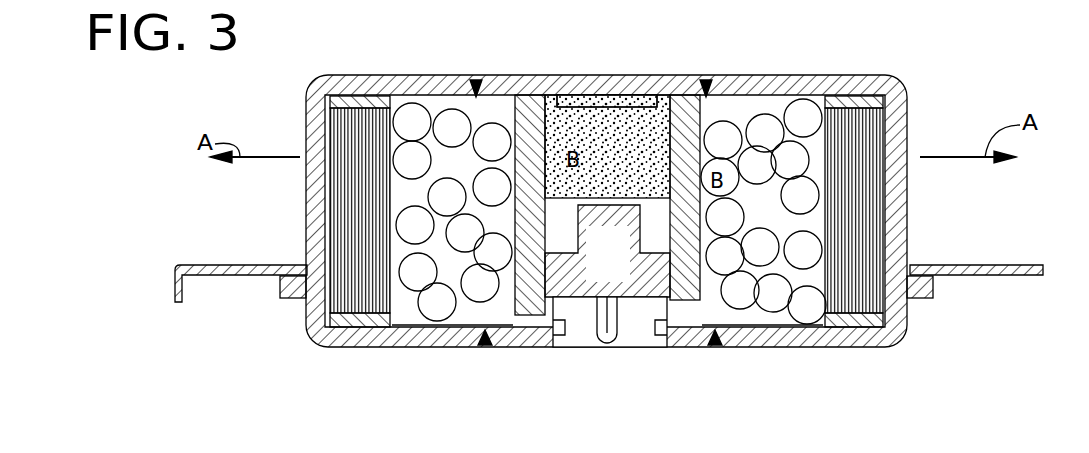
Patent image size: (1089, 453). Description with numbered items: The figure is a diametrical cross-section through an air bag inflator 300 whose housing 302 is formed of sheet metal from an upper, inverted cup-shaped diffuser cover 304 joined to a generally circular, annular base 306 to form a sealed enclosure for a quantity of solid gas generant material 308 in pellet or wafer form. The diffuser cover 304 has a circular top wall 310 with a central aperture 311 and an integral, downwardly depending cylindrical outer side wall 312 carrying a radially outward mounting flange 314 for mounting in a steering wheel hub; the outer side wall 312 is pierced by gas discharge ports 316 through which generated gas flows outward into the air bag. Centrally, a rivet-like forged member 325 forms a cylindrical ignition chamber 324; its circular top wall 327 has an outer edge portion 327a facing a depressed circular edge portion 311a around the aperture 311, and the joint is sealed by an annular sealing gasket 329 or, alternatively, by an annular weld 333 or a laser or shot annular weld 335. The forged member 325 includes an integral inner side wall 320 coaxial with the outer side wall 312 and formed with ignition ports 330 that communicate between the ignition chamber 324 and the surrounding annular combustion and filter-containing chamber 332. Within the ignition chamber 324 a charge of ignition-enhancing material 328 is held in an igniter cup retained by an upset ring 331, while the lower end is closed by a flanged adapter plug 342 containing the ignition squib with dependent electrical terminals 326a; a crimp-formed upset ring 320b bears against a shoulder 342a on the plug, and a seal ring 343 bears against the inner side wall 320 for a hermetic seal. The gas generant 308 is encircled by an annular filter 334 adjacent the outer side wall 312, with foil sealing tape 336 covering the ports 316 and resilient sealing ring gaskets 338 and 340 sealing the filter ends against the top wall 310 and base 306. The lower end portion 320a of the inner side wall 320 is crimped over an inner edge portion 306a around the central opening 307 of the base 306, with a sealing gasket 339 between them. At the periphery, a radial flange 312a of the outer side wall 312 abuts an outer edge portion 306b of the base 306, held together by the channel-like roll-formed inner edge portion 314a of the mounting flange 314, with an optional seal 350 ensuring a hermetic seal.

The air bag inflator 300 is at (632, 405).
The housing 302 is at (342, 372).
The diffuser cover 304 is at (892, 76).
The annular base 306 is at (410, 348).
The inner edge portion 306a is at (482, 344).
The outer edge portion 306b is at (283, 326).
The central opening 307 is at (692, 340).
The gas generant material 308 is at (494, 210).
The circular top wall 310 is at (355, 77).
The central aperture 311 is at (688, 97).
The circular edge portion 311a is at (497, 90).
The cylindrical outer side wall 312 is at (320, 195).
The radial flange 312a is at (283, 290).
The mounting flange 314 is at (176, 266).
The roll-formed inner edge portion 314a is at (940, 340).
The gas discharge ports 316 is at (306, 130).
The inner side wall 320 is at (668, 256).
The lower end portion 320a is at (488, 340).
The upset ring 320b is at (676, 340).
The ignition chamber 324 is at (562, 212).
The forged member 325 is at (524, 72).
The electrical terminals 326a is at (598, 345).
The circular top wall 327 is at (730, 78).
The outer edge portion 327a is at (700, 78).
The ignition-enhancing material 328 is at (635, 160).
The annular sealing gasket 329 is at (745, 80).
The ignition ports 330 is at (672, 172).
The upset ring 331 is at (652, 206).
The combustion and filter-containing chamber 332 is at (437, 78).
The annular weld 333 is at (472, 90).
The annular filter 334 is at (346, 232).
The annular weld 335 is at (580, 50).
The sealing tape 336 is at (323, 168).
The sealing ring gasket 338 is at (332, 95).
The sealing gasket 339 is at (496, 343).
The sealing ring gasket 340 is at (330, 347).
The adapter plug 342 is at (548, 362).
The shoulder 342a is at (540, 345).
The seal ring 343 is at (686, 300).
The seal 350 is at (930, 305).